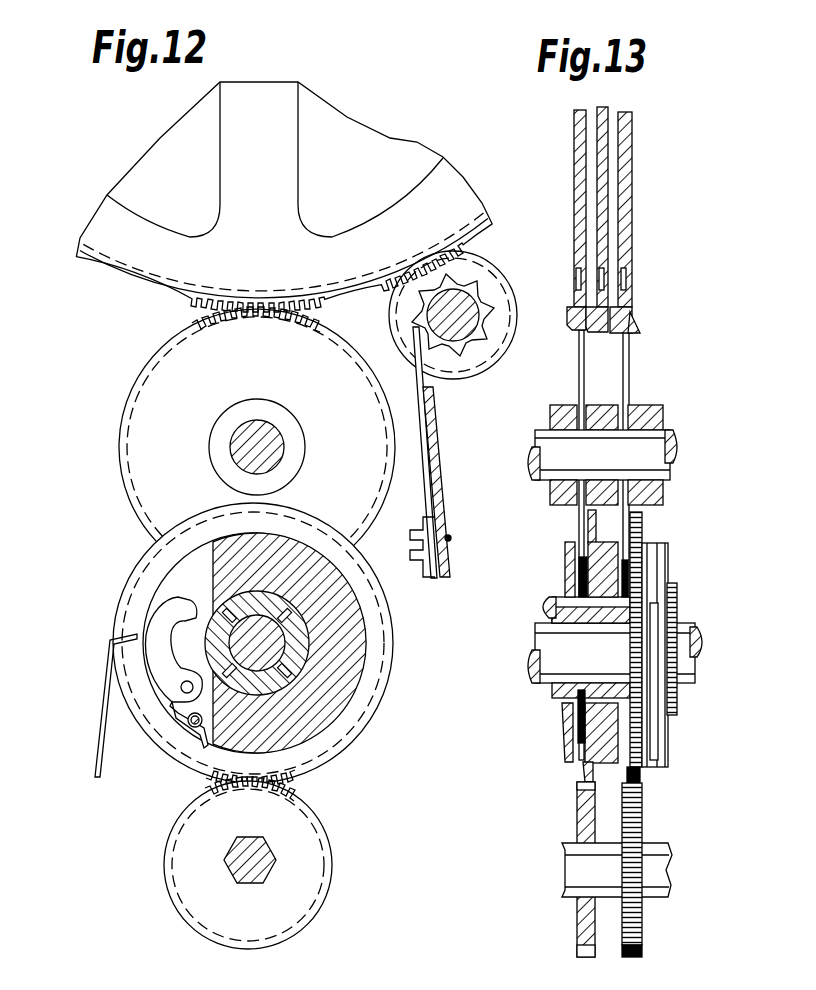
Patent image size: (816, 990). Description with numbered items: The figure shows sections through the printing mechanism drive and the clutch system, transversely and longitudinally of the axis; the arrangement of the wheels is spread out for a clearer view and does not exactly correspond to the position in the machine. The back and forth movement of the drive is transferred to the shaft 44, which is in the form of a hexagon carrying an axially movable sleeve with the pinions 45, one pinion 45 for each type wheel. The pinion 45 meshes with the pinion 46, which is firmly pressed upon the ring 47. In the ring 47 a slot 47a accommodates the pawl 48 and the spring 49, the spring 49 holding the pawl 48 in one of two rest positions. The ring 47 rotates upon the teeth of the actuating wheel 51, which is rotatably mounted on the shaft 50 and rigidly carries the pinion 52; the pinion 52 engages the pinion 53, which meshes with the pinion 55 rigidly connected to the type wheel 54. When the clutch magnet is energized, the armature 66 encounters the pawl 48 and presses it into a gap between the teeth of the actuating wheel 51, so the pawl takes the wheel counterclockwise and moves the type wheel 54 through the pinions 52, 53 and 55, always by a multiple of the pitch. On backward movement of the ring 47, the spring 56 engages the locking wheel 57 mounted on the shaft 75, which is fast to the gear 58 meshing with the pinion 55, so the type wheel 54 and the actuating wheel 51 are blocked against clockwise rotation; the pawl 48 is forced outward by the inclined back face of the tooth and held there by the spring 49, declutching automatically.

In FIG. 12, the shaft 44 is at (258, 874).
In FIG. 13, the shaft 44 is at (580, 870).
In FIG. 12, the pinion 45 is at (296, 838).
In FIG. 12, the pinion 46 is at (341, 727).
In FIG. 13, the pinion 46 is at (585, 772).
In FIG. 12, the ring 47 is at (323, 680).
In FIG. 13, the ring 47 is at (585, 762).
In FIG. 12, the slot 47a is at (187, 585).
In FIG. 12, the pawl 48 is at (168, 680).
In FIG. 12, the spring 49 is at (205, 728).
In FIG. 12, the shaft 50 is at (306, 639).
In FIG. 13, the shaft 50 is at (557, 653).
In FIG. 12, the actuating wheel 51 is at (285, 663).
In FIG. 13, the pinion 52 is at (570, 705).
In FIG. 12, the pinion 53 is at (155, 448).
In FIG. 13, the pinion 53 is at (577, 513).
In FIG. 12, the type wheel 54 is at (133, 292).
In FIG. 13, the type wheel 54 is at (573, 330).
In FIG. 12, the pinion 55 is at (458, 191).
In FIG. 13, the pinion 55 is at (630, 296).
In FIG. 12, the spring 56 is at (425, 462).
In FIG. 12, the locking wheel 57 is at (500, 300).
In FIG. 12, the gear 58 is at (492, 348).
In FIG. 12, the armature 66 is at (102, 728).
In FIG. 12, the shaft 75 is at (462, 306).